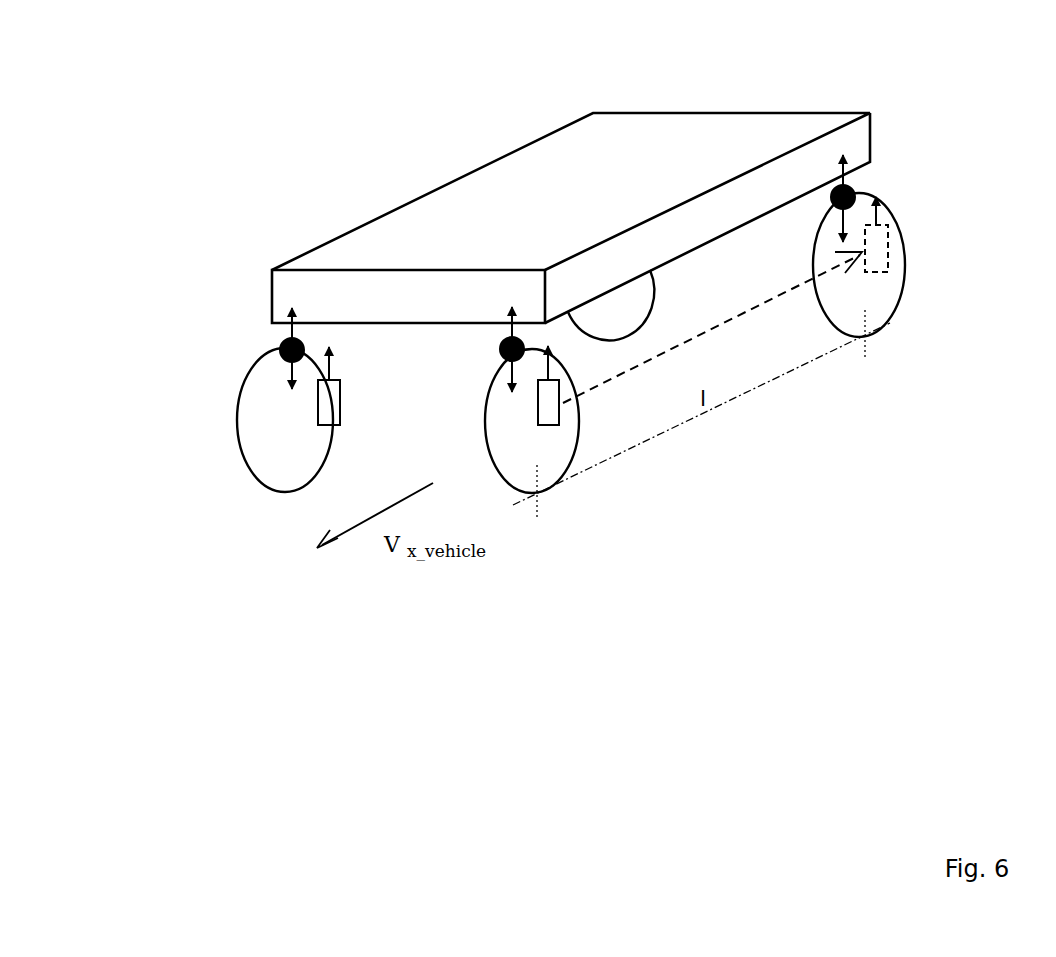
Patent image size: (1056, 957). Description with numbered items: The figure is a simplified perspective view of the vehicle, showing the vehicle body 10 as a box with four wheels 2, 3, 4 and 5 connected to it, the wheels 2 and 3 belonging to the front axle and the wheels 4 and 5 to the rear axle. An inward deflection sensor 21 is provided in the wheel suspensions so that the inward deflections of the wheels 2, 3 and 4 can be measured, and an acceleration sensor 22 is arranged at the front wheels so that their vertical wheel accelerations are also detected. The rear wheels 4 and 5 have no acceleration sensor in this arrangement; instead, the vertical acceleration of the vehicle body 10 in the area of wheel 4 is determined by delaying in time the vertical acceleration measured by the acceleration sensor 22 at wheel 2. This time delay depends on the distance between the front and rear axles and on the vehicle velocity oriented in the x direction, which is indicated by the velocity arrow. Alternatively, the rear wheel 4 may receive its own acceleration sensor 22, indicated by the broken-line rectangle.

The vehicle body 10 is at (740, 133).
The wheel 2 is at (568, 470).
The wheel 3 is at (273, 493).
The wheel 4 is at (905, 285).
The wheel 5 is at (650, 290).
The inward deflection sensor 21 is at (283, 345).
The acceleration sensor 22 is at (325, 410).